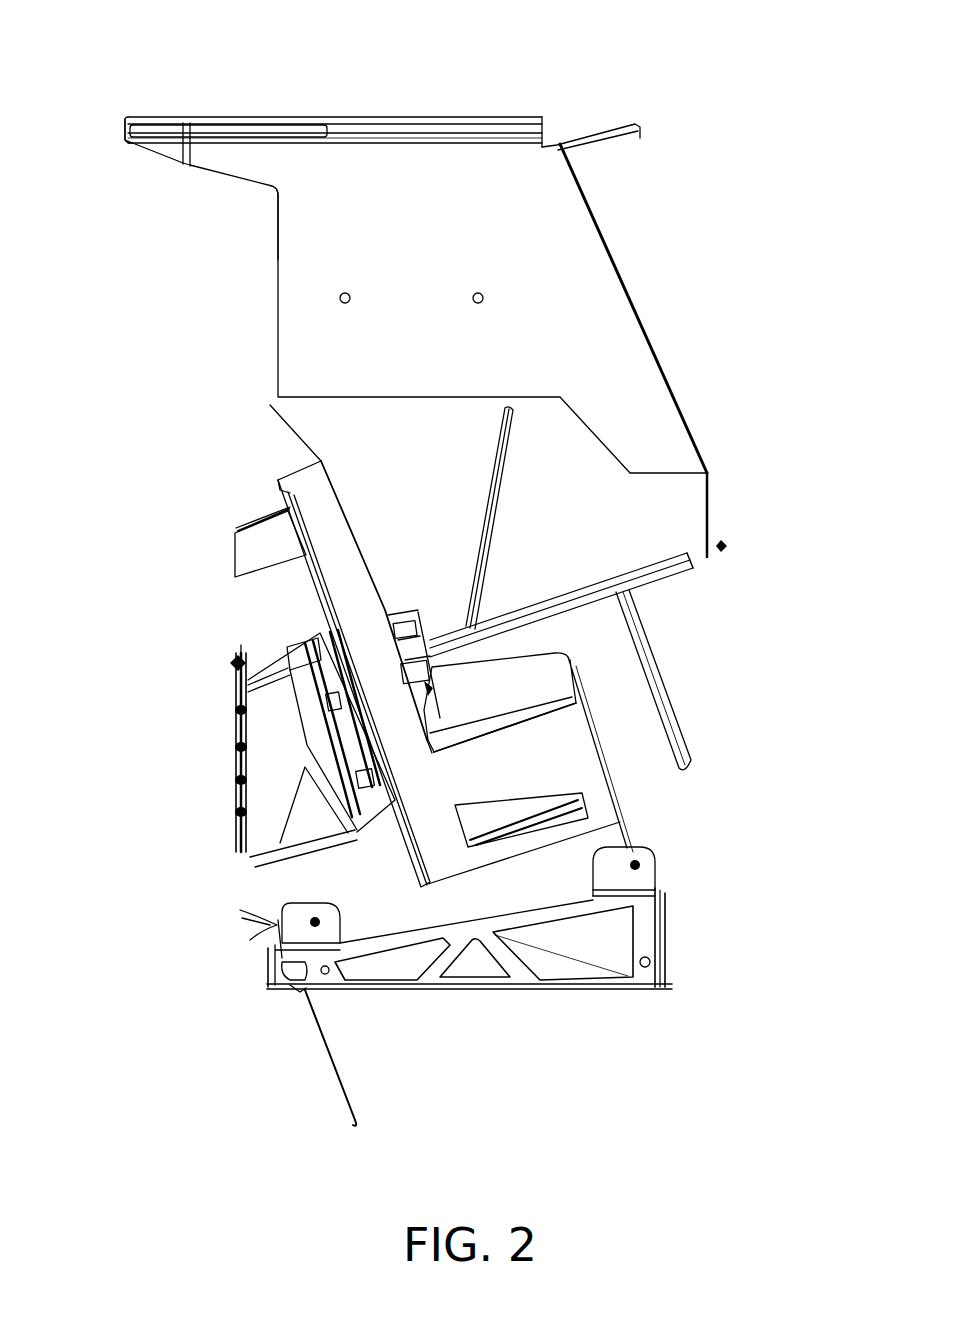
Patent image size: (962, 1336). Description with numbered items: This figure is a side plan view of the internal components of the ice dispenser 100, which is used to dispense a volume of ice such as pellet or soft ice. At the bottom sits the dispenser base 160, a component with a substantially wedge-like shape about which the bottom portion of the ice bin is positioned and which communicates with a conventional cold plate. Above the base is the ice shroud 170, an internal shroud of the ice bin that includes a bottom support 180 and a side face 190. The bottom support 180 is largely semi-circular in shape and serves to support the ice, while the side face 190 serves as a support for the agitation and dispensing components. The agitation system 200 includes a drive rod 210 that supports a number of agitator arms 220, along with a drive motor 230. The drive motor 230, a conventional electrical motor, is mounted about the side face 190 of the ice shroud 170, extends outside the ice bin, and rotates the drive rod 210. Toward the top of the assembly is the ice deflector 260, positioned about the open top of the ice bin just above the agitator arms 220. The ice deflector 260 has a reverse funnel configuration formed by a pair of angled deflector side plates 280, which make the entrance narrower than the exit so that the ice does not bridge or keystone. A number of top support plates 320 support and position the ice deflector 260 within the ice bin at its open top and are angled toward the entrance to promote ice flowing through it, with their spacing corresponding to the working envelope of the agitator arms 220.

The ice dispenser 100 is at (96, 76).
The dispenser base 160 is at (583, 990).
The ice shroud 170 is at (396, 851).
The bottom support 180 is at (461, 869).
The side face 190 is at (302, 469).
The agitation system 200 is at (668, 582).
The drive rod 210 is at (540, 600).
The agitator arms 220 is at (504, 477).
The drive motor 230 is at (243, 874).
The ice deflector 260 is at (632, 274).
The deflector side plates 280 is at (297, 218).
The top support plates 320 is at (437, 119).